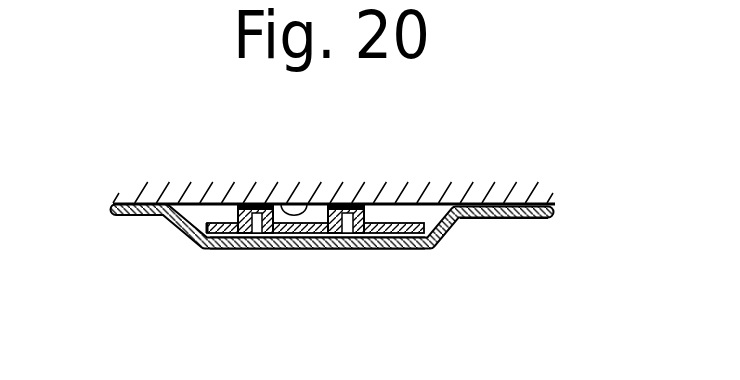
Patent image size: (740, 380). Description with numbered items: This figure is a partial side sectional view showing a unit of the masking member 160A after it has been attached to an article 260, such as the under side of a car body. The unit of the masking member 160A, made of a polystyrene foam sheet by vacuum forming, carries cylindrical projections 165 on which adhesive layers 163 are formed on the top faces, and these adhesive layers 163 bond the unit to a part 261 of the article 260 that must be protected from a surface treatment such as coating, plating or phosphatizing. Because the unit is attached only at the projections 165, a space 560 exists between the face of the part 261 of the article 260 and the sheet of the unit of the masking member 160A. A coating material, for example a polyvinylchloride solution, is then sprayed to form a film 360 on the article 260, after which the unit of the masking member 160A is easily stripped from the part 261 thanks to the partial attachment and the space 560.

The adhesive layer 163 is at (250, 202).
The part of the article 261 is at (282, 204).
The space 560 is at (404, 222).
The article 260 is at (496, 206).
The cylindrical projection 165 is at (258, 238).
The unit of the masking member 160A is at (328, 240).
The film 360 is at (481, 221).